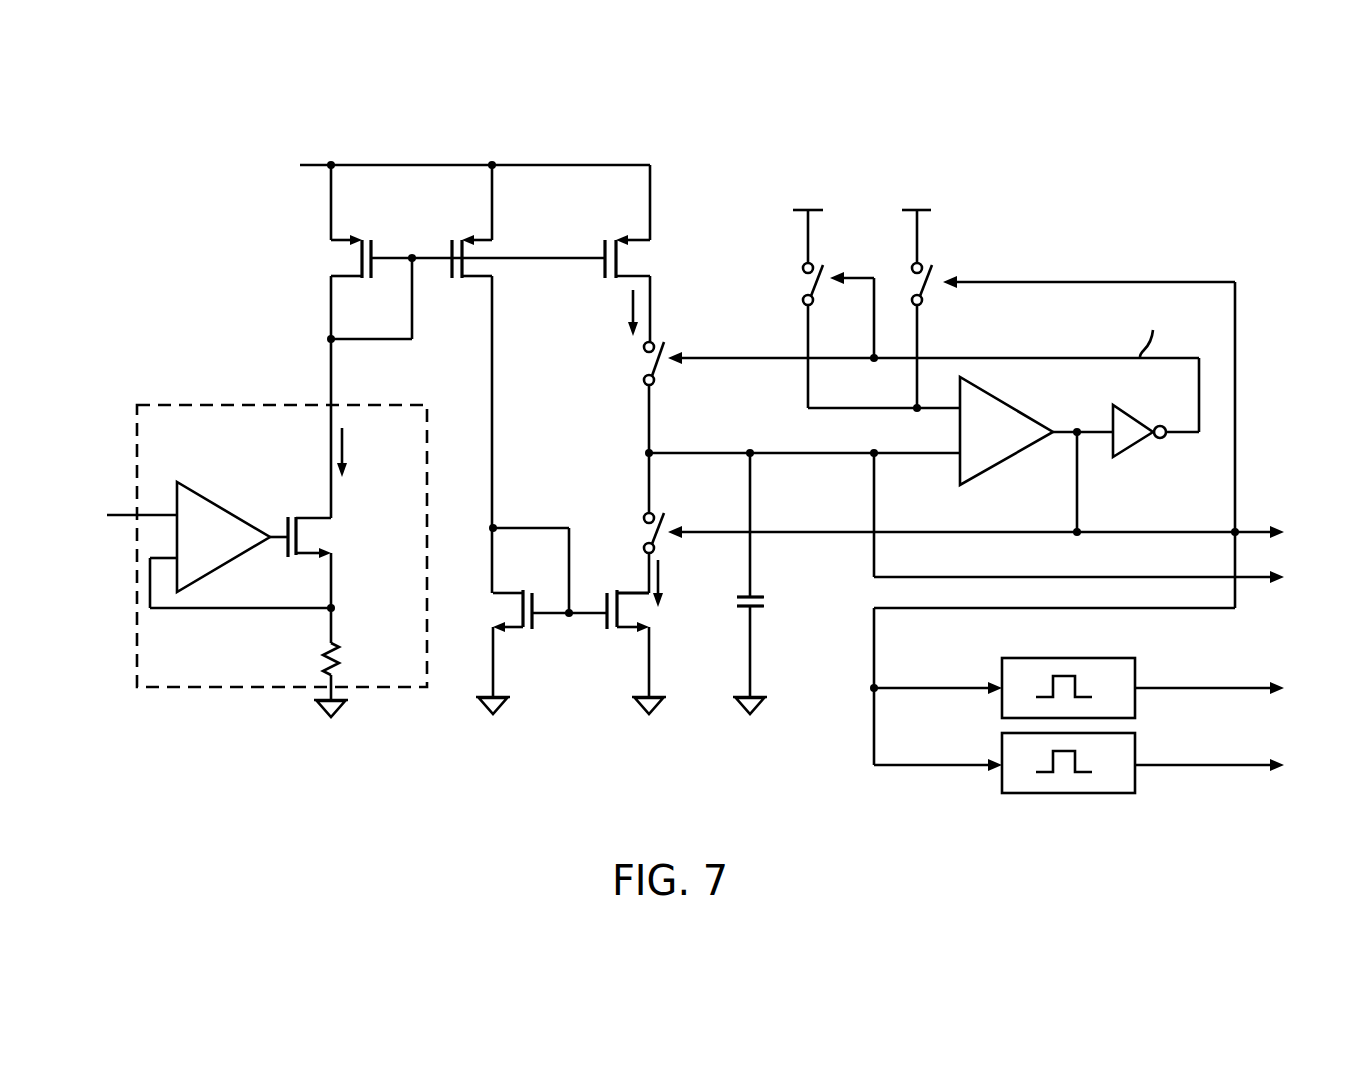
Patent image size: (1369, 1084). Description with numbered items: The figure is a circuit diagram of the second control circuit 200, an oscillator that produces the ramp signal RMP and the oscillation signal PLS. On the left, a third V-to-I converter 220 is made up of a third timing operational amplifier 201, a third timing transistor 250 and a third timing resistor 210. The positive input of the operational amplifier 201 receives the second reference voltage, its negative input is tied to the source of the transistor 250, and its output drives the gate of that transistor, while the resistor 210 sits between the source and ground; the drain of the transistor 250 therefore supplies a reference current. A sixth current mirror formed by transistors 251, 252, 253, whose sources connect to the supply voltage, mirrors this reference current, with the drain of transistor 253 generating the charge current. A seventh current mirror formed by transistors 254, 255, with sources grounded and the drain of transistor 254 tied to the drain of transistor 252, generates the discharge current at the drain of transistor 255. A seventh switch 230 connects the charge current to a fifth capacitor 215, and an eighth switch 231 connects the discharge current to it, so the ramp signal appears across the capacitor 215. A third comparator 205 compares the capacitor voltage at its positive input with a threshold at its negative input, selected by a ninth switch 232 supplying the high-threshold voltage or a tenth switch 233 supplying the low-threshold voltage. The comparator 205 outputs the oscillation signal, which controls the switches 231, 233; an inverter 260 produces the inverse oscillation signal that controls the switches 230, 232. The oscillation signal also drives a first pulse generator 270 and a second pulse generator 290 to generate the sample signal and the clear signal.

The second control circuit 200 is at (1315, 183).
The third timing operational amplifier 201 is at (200, 495).
The third comparator 205 is at (1000, 468).
The third timing resistor 210 is at (334, 652).
The fifth capacitor 215 is at (759, 596).
The third V-to-I converter 220 is at (208, 403).
The seventh switch 230 is at (655, 362).
The eighth switch 231 is at (657, 530).
The ninth switch 232 is at (818, 290).
The tenth switch 233 is at (930, 290).
The third timing transistor 250 is at (288, 513).
The transistor 251 is at (360, 238).
The transistor 252 is at (462, 278).
The transistor 253 is at (616, 238).
The transistor 254 is at (518, 630).
The transistor 255 is at (613, 630).
The inverter 260 is at (1128, 447).
The first pulse generator 270 is at (1137, 672).
The second pulse generator 290 is at (1137, 783).